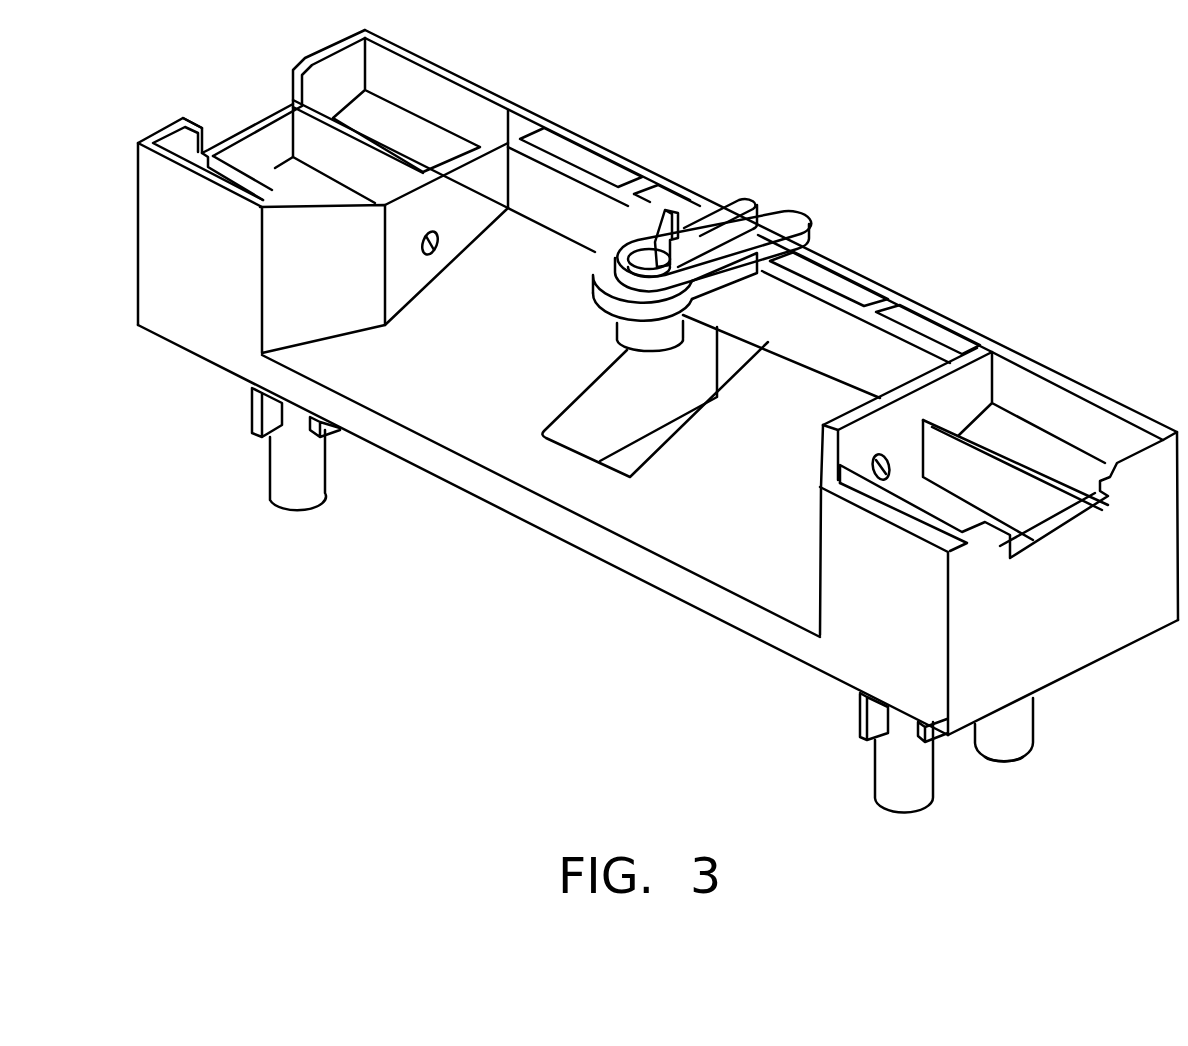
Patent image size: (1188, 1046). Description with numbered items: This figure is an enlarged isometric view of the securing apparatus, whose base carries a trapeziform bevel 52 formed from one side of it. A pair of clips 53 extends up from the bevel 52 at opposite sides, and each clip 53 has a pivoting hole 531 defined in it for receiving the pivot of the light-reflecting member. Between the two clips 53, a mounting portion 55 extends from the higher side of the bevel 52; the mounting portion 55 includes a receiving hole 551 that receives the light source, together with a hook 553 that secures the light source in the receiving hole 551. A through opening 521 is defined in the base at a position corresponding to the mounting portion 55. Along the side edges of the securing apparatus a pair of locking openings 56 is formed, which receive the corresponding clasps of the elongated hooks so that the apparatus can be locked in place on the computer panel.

The trapeziform bevel 52 is at (485, 425).
The through opening 521 is at (627, 477).
The clips 53 is at (397, 238).
The pivoting hole 531 is at (432, 253).
The mounting portion 55 is at (750, 247).
The receiving hole 551 is at (643, 262).
The hook 553 is at (675, 207).
The locking openings 56 is at (245, 100).